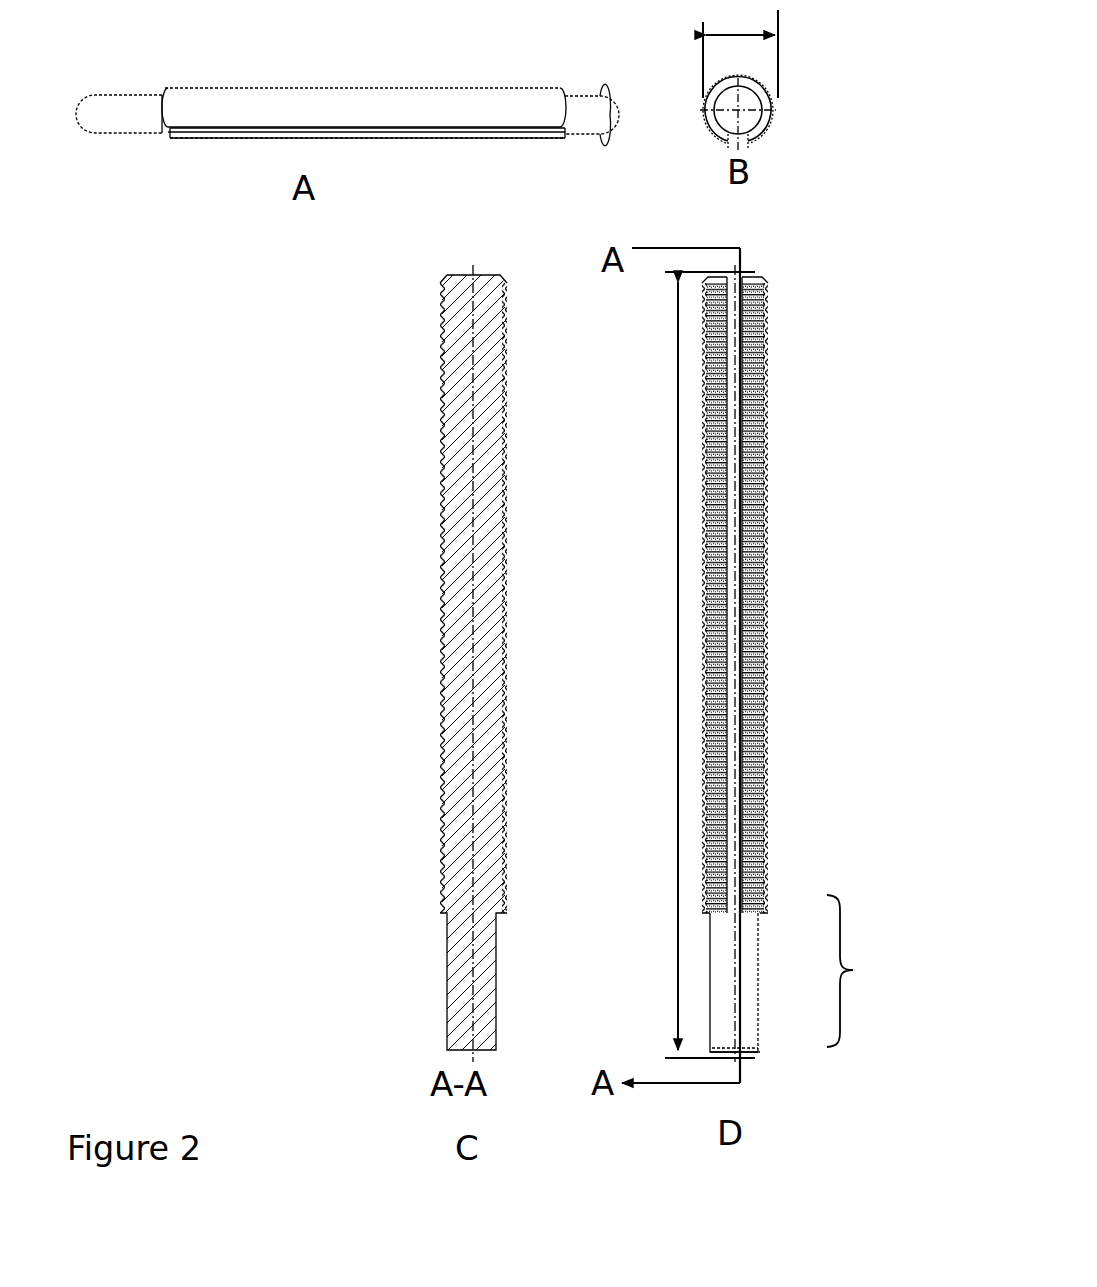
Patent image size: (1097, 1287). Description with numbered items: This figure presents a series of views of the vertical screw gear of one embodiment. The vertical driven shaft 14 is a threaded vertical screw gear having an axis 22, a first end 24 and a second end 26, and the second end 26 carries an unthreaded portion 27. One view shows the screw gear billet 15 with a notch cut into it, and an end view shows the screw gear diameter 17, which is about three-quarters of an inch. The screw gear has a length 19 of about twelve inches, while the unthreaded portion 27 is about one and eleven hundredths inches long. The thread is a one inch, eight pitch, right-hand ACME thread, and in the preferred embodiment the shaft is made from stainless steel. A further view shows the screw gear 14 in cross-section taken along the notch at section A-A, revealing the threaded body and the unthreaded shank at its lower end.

The vertical driven shaft 14 is at (404, 734).
The screw gear billet 15 is at (203, 173).
The screw gear diameter 17 is at (815, 60).
The length 19 is at (768, 679).
The axis 22 is at (485, 1040).
The first end 24 is at (755, 258).
The second end 26 is at (755, 1085).
The unthreaded portion 27 is at (865, 920).